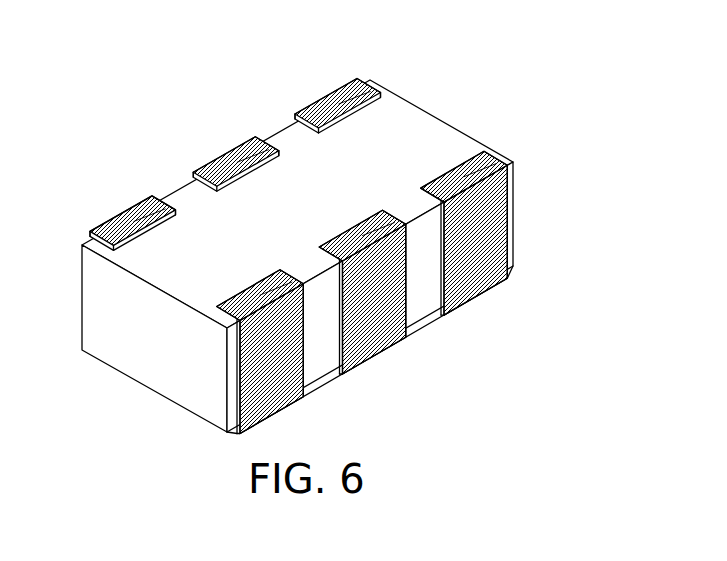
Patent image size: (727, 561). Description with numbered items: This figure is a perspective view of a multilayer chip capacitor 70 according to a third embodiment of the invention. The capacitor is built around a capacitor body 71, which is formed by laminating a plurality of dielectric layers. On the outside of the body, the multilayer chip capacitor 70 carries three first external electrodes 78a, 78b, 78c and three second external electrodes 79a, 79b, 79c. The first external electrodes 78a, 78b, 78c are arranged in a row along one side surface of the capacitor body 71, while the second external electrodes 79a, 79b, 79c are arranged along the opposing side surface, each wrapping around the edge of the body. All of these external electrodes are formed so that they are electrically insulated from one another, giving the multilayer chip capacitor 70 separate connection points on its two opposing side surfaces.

The multilayer chip capacitor 70 is at (95, 90).
The capacitor body 71 is at (98, 307).
The first external electrode 78a is at (128, 220).
The first external electrode 78b is at (232, 160).
The first external electrode 78c is at (335, 102).
The second external electrode 79a is at (287, 368).
The second external electrode 79b is at (387, 317).
The second external electrode 79c is at (495, 253).